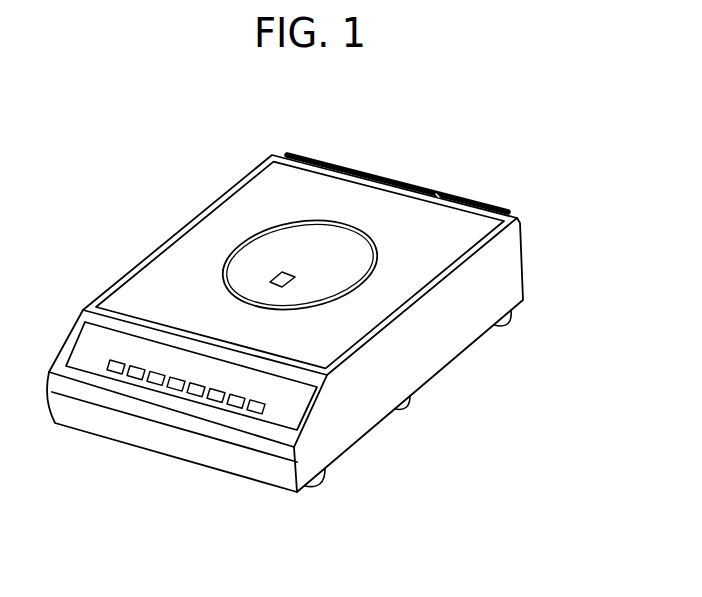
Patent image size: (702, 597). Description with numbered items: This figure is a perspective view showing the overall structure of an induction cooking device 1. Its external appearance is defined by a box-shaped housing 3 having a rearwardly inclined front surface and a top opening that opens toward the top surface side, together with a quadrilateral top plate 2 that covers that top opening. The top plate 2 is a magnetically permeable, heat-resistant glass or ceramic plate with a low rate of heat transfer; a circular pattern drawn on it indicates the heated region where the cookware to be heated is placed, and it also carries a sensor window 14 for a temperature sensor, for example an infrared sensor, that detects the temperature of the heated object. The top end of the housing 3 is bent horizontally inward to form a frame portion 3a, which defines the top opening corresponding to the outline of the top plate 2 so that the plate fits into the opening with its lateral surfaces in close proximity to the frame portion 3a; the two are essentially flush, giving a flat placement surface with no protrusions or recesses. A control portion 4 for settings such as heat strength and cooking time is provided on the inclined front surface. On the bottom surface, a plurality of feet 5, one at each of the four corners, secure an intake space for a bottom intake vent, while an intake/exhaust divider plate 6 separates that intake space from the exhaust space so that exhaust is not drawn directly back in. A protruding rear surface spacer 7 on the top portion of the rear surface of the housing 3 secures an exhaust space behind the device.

The induction cooking device 1 is at (419, 154).
The top plate 2 is at (447, 247).
The housing 3 is at (443, 353).
The frame portion 3a is at (140, 263).
The control portion 4 is at (278, 407).
The feet 5 is at (509, 324).
The intake/exhaust divider plate 6 is at (408, 406).
The rear surface spacer 7 is at (515, 219).
The sensor window 14 is at (278, 273).